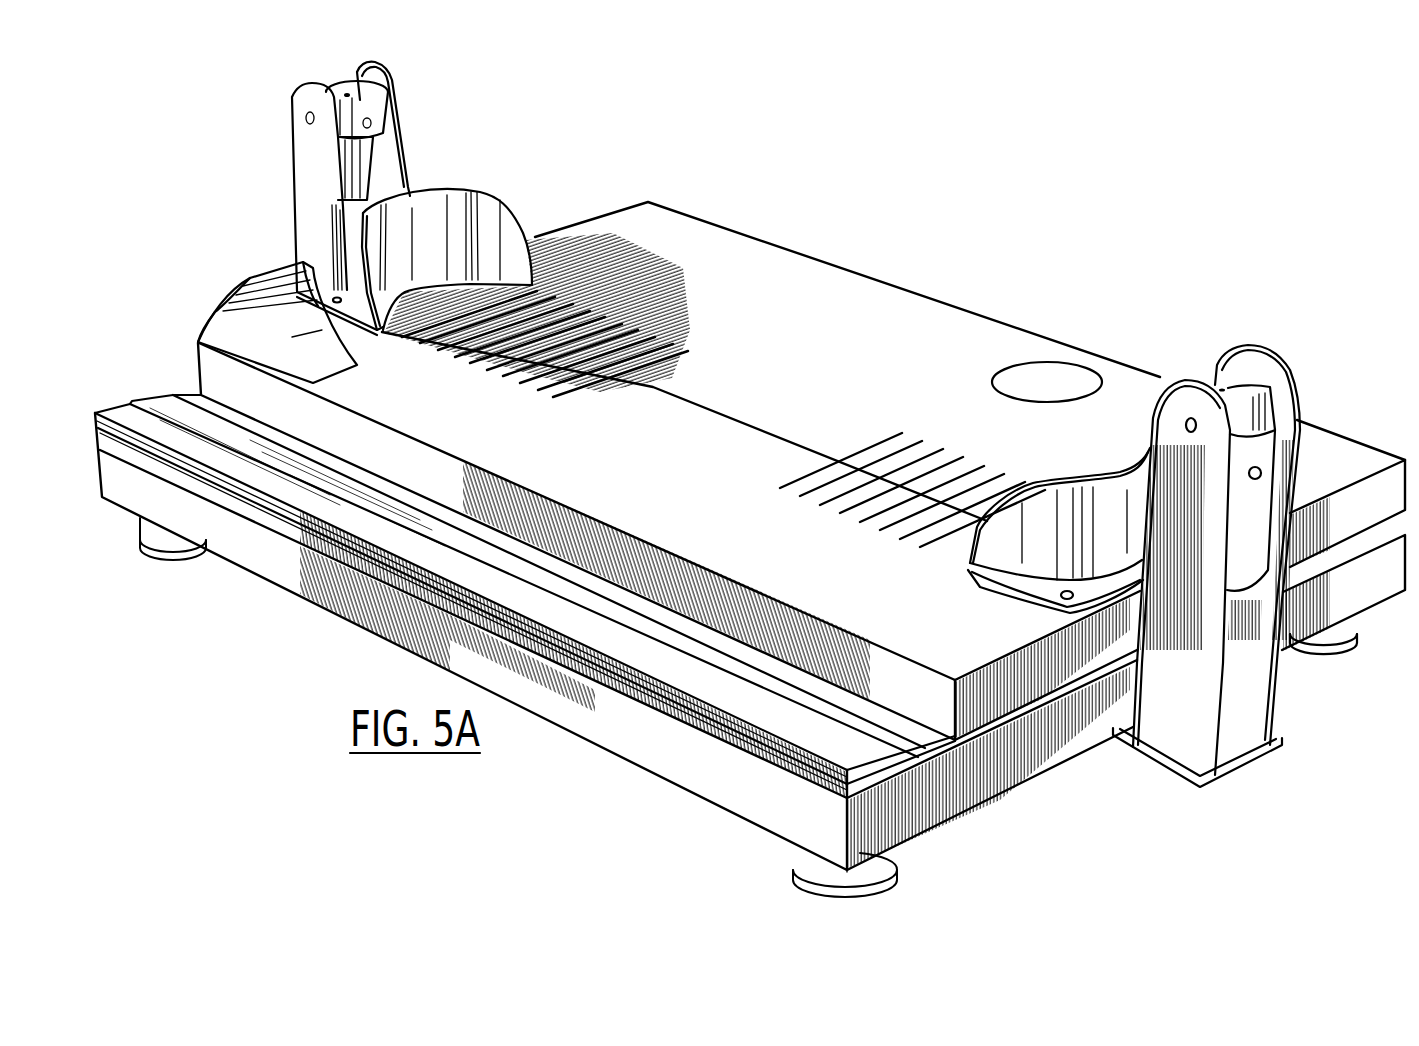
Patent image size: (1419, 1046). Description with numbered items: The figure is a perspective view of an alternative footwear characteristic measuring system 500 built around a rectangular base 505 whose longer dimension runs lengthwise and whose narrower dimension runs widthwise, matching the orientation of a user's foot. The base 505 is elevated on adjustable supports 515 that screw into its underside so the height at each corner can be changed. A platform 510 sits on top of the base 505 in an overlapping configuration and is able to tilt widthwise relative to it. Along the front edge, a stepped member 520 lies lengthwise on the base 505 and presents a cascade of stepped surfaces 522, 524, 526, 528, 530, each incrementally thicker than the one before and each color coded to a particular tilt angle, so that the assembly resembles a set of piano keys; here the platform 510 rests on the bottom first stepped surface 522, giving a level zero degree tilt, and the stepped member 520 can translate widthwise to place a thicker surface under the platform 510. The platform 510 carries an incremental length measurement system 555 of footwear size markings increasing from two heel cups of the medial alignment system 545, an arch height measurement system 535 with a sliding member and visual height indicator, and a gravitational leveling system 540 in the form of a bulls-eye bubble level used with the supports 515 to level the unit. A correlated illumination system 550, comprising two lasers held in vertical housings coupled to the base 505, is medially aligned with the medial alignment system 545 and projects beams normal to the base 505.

The footwear characteristic measuring system 500 is at (1168, 290).
The base 505 is at (1002, 762).
The platform 510 is at (1053, 662).
The adjustable supports 515 is at (168, 538).
The stepped member 520 is at (930, 788).
The first stepped surface 522 is at (930, 788).
The stepped surface 524 is at (963, 680).
The stepped surface 526 is at (897, 745).
The stepped surface 528 is at (857, 745).
The stepped surface 530 is at (767, 743).
The arch height measurement system 535 is at (232, 308).
The gravitational leveling system 540 is at (1047, 377).
The medial alignment system 545 is at (498, 237).
The correlated illumination system 550 is at (1240, 538).
The incremental length measurement system 555 is at (832, 482).